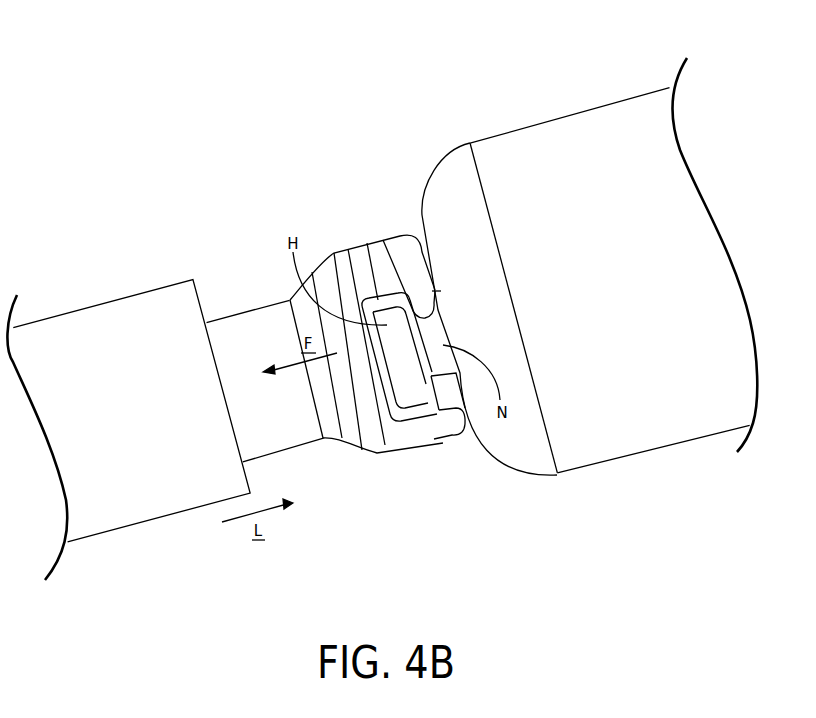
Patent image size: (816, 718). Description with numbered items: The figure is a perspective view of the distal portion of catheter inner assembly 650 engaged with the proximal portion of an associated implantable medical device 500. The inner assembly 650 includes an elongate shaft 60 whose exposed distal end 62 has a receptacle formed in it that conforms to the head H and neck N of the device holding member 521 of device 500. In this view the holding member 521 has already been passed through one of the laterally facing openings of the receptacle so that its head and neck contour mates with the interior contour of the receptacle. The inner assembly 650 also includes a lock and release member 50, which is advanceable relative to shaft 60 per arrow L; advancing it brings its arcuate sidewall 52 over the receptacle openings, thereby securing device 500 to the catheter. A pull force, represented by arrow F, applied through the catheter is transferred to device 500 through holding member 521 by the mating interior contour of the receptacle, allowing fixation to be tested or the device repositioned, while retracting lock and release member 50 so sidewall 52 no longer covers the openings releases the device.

The implantable medical device 500 is at (558, 84).
The catheter inner assembly 650 is at (163, 172).
The lock and release member 50 is at (105, 279).
The arcuate sidewall 52 is at (165, 430).
The elongate shaft 60 is at (243, 279).
The distal end 62 is at (378, 255).
The device holding member 521 is at (430, 391).